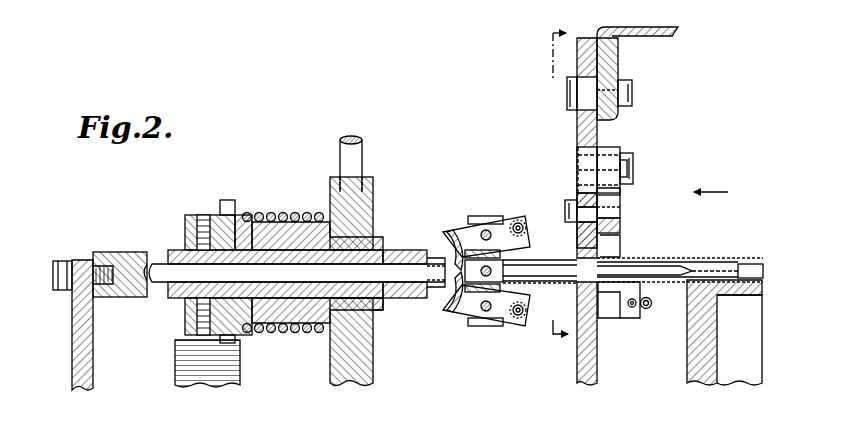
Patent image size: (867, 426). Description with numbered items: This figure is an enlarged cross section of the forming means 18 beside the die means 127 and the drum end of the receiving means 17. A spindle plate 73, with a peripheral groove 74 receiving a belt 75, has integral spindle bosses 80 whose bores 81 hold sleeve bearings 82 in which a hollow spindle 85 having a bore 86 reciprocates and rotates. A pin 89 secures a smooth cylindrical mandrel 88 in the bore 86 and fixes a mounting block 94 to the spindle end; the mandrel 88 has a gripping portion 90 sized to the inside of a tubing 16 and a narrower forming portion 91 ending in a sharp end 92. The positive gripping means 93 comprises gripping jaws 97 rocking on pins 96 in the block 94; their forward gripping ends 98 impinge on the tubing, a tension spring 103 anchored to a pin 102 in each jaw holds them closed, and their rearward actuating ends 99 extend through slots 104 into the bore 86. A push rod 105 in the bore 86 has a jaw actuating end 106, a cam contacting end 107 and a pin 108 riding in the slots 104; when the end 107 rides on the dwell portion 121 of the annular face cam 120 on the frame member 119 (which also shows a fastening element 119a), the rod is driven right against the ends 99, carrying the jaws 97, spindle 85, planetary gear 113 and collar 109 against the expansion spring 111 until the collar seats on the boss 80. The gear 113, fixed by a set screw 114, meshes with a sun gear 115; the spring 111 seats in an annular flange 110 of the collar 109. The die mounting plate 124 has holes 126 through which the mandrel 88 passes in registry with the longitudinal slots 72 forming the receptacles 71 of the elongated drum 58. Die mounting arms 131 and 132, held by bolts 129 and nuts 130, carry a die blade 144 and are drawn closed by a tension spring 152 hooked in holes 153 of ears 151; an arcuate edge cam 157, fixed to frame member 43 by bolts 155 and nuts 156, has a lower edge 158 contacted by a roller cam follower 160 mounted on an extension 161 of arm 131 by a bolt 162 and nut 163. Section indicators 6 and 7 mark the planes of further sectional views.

The tubing 16 is at (728, 260).
The receiving means 17 is at (714, 388).
The forming means 18 is at (378, 176).
The frame member 43 is at (676, 35).
The elongated drum 58 is at (690, 362).
The receptacles 71 is at (752, 264).
The longitudinal slots 72 is at (739, 340).
The spindle plate 73 is at (376, 378).
The peripheral groove 74 is at (345, 180).
The belt 75 is at (351, 136).
The spindle bosses 80 is at (272, 334).
The bores 81 is at (285, 330).
The sleeve bearings 82 is at (383, 310).
The hollow spindle 85 is at (180, 300).
The bore 86 is at (312, 333).
The mandrel 88 is at (540, 283).
The pin 89 is at (510, 228).
The gripping portion 90 is at (540, 262).
The forming portion 91 is at (664, 262).
The relatively sharp end 92 is at (696, 260).
The positive gripping means 93 is at (467, 214).
The mounting block 94 is at (480, 216).
The pins 96 is at (488, 232).
The gripping jaws 97 is at (507, 328).
The forward gripping ends 98 is at (522, 247).
The rearward actuating ends 99 is at (447, 238).
The pin 102 is at (523, 226).
The tension spring 103 is at (524, 312).
The slots 104 is at (458, 232).
The push rod 105 is at (172, 284).
The jaw actuating end 106 is at (427, 292).
The cam contacting end 107 is at (162, 262).
The pin 108 is at (427, 252).
The annular collar 109 is at (244, 214).
The annular flange 110 is at (258, 212).
The expansion spring 111 is at (292, 221).
The planetary gear 113 is at (228, 200).
The set screw 114 is at (203, 214).
The sun gear 115 is at (180, 378).
The frame member 119 is at (82, 360).
The bolt 119a is at (64, 300).
The annular face cam 120 is at (107, 250).
The dwell portion 121 is at (152, 262).
The die mounting plate 124 is at (577, 372).
The holes 126 is at (612, 318).
The die means 127 is at (520, 132).
The bolts 129 is at (622, 208).
The nuts 130 is at (570, 200).
The die mounting arm 131 is at (622, 231).
The die mounting arm 132 is at (632, 320).
The die blade 144 is at (622, 252).
The ears 151 is at (651, 300).
The tension spring 152 is at (649, 306).
The holes 153 is at (633, 308).
The bolts 155 is at (567, 94).
The nuts 156 is at (632, 88).
The arcuate edge cam 157 is at (578, 118).
The lower edge 158 is at (578, 150).
The roller cam follower 160 is at (605, 160).
The elongated extension 161 is at (620, 188).
The bolt 162 is at (633, 170).
The nut 163 is at (628, 160).
The section line 6- 6 is at (559, 183).
The section line 7- 7 is at (728, 192).